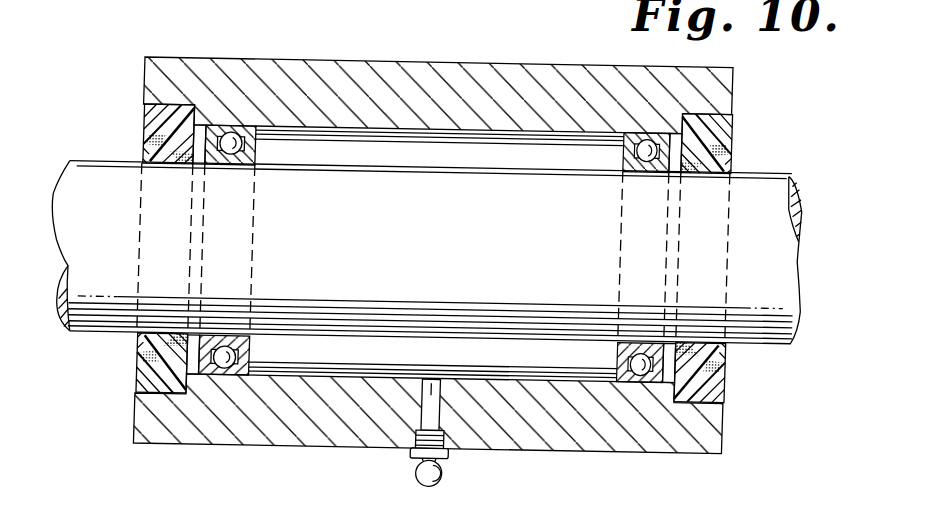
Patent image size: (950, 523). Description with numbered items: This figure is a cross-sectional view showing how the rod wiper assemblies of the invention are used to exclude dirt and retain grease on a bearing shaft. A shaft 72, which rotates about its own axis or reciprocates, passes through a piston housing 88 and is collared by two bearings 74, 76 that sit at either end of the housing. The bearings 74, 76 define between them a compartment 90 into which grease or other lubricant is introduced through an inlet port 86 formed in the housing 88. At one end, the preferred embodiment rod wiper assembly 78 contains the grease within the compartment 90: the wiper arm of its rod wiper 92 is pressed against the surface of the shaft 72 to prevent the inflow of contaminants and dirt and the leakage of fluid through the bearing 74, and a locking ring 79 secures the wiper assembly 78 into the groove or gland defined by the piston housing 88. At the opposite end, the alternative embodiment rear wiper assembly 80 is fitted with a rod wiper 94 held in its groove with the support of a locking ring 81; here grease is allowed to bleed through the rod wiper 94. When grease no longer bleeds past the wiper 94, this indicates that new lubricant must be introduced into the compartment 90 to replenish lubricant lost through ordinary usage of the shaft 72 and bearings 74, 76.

The shaft 72 is at (770, 264).
The bearing 74 is at (259, 125).
The bearing 76 is at (634, 129).
The rod wiper assembly 78 is at (130, 125).
The locking ring 79 is at (158, 382).
The rod wiper assembly 80 is at (743, 376).
The locking ring 81 is at (735, 115).
The inlet port 86 is at (460, 472).
The piston housing 88 is at (313, 422).
The compartment 90 is at (525, 141).
The rod wiper 92 is at (179, 103).
The rod wiper 94 is at (699, 105).